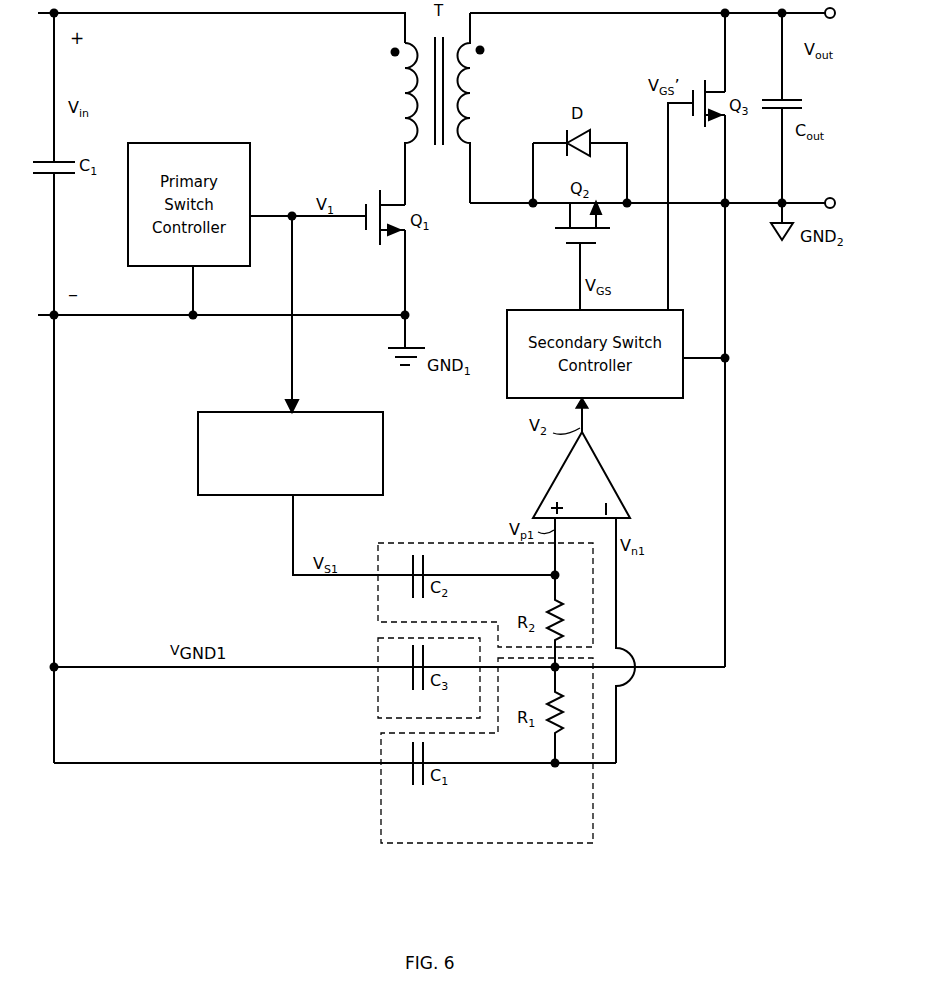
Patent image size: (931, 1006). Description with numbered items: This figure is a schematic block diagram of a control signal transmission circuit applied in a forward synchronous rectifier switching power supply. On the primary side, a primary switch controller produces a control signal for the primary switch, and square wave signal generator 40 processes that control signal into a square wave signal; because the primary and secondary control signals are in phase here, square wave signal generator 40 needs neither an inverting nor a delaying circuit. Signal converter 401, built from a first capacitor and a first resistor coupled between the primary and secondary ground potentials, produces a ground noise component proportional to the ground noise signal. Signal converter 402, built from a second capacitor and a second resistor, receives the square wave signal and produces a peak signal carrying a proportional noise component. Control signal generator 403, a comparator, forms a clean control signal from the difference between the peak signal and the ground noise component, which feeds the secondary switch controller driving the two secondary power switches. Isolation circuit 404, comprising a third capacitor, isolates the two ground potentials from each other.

The square wave signal generator 40 is at (340, 474).
The signal converter 401 is at (558, 836).
The signal converter 402 is at (451, 543).
The control signal generator 403 is at (560, 471).
The isolation circuit 404 is at (378, 709).